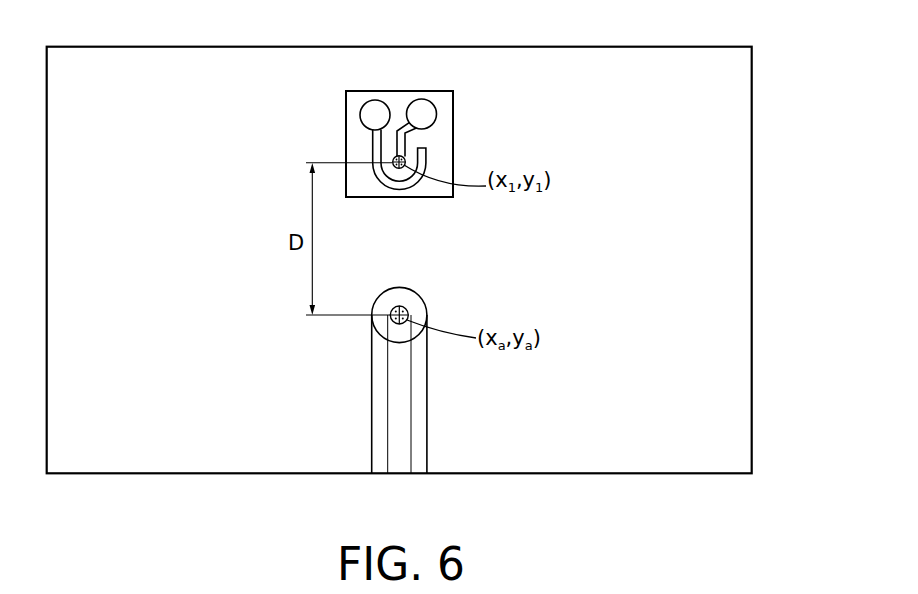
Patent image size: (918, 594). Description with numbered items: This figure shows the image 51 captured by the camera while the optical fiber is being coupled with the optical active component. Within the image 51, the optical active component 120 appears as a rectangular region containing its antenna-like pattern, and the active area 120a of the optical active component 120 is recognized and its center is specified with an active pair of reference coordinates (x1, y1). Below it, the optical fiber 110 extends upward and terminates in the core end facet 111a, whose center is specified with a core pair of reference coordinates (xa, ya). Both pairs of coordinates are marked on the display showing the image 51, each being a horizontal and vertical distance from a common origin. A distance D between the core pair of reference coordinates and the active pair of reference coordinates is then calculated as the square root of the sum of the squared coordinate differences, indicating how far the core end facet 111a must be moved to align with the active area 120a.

The image 51 is at (752, 122).
The optical active component 120 is at (455, 112).
The active area 120a is at (402, 157).
The optical fiber 110 is at (428, 392).
The core end facet 111a is at (408, 308).